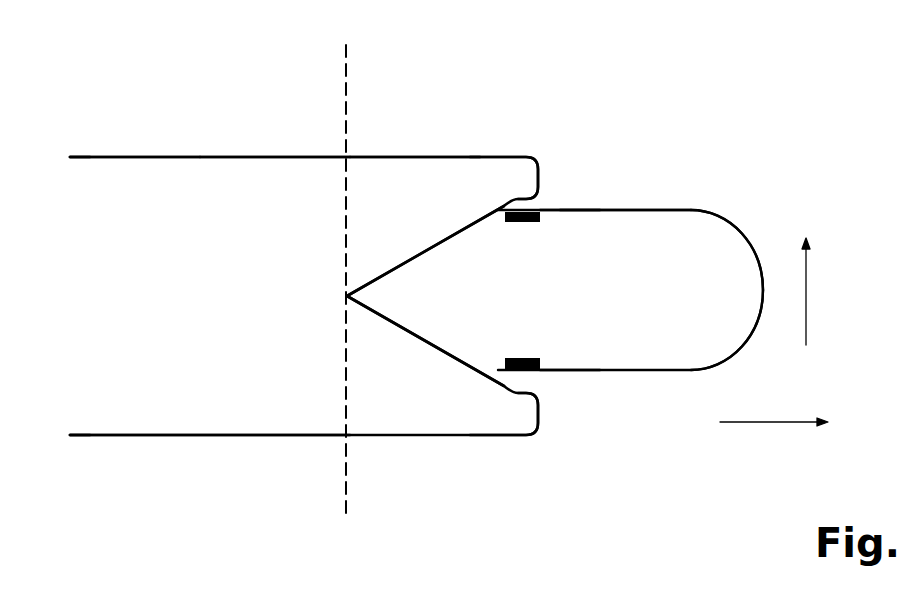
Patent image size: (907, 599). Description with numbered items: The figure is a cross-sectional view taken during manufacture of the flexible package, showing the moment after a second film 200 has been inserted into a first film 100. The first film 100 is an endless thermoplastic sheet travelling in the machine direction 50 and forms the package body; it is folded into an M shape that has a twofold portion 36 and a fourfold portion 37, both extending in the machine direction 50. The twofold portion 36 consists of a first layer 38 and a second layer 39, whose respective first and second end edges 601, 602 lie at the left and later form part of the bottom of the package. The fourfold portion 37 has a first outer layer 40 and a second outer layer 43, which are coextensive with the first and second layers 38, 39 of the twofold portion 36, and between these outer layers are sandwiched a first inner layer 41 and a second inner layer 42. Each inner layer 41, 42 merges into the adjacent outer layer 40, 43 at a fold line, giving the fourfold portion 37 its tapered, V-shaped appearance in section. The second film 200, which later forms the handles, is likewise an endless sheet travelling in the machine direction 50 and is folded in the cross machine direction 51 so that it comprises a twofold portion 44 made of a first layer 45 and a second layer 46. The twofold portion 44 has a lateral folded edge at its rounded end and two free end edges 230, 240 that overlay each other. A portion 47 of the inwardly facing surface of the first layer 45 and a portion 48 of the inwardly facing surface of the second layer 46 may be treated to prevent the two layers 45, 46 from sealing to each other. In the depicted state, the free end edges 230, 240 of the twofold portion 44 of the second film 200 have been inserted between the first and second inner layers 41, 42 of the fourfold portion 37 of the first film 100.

The first film 100 is at (197, 110).
The twofold portion 36 is at (280, 147).
The fourfold portion 37 is at (399, 147).
The first layer 38 is at (116, 157).
The second layer 39 is at (220, 435).
The first outer layer 40 is at (478, 157).
The first inner layer 41 is at (392, 270).
The second inner layer 42 is at (392, 322).
The second outer layer 43 is at (482, 435).
The twofold portion 44 is at (651, 200).
The first layer 45 is at (665, 211).
The second layer 46 is at (665, 369).
The portion of the inwardly facing surface of the first layer 47 is at (533, 222).
The portion of the inwardly facing surface of the second layer 48 is at (533, 358).
The second film 200 is at (755, 182).
The free end edge 230 is at (498, 222).
The free end edge 240 is at (498, 358).
The first end edge 601 is at (70, 158).
The second end edge 602 is at (72, 435).
The machine direction 50 is at (774, 424).
The cross machine direction 51 is at (825, 291).